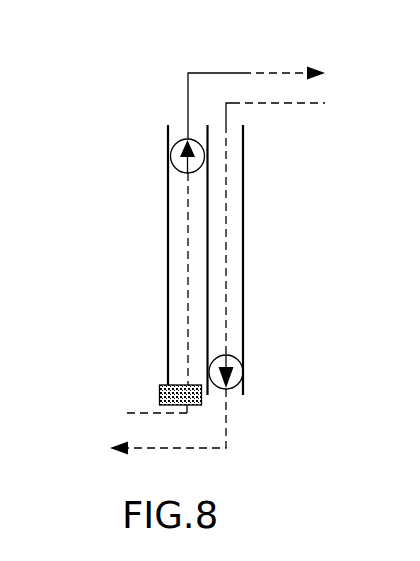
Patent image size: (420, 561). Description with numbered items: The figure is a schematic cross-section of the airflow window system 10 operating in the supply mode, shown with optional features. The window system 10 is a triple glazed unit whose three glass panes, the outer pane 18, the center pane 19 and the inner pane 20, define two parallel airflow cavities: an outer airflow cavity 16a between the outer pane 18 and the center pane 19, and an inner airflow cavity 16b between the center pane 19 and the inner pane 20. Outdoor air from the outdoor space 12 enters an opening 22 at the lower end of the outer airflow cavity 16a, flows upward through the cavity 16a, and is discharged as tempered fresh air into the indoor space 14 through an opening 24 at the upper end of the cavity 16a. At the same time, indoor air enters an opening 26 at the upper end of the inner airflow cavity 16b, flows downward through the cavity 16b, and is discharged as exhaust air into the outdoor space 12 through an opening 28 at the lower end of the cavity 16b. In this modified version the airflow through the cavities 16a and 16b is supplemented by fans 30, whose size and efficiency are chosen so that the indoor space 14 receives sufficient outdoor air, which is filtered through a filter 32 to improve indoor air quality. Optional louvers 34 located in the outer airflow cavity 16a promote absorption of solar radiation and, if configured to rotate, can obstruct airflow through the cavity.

The airflow window system 10 is at (147, 112).
The outdoor space 12 is at (83, 246).
The indoor space 14 is at (329, 243).
The outer airflow cavity 16a is at (175, 203).
The inner airflow cavity 16b is at (232, 161).
The outer pane 18 is at (167, 273).
The center pane 19 is at (208, 298).
The inner pane 20 is at (244, 208).
The opening at lower end of outer airflow cavity 22 is at (205, 402).
The opening at upper end of outer airflow cavity 24 is at (181, 131).
The opening at upper end of inner airflow cavity 26 is at (236, 128).
The opening at lower end of inner airflow cavity 28 is at (235, 395).
The fan 30 is at (171, 150).
The filter 32 is at (158, 389).
The louver 34 is at (202, 254).